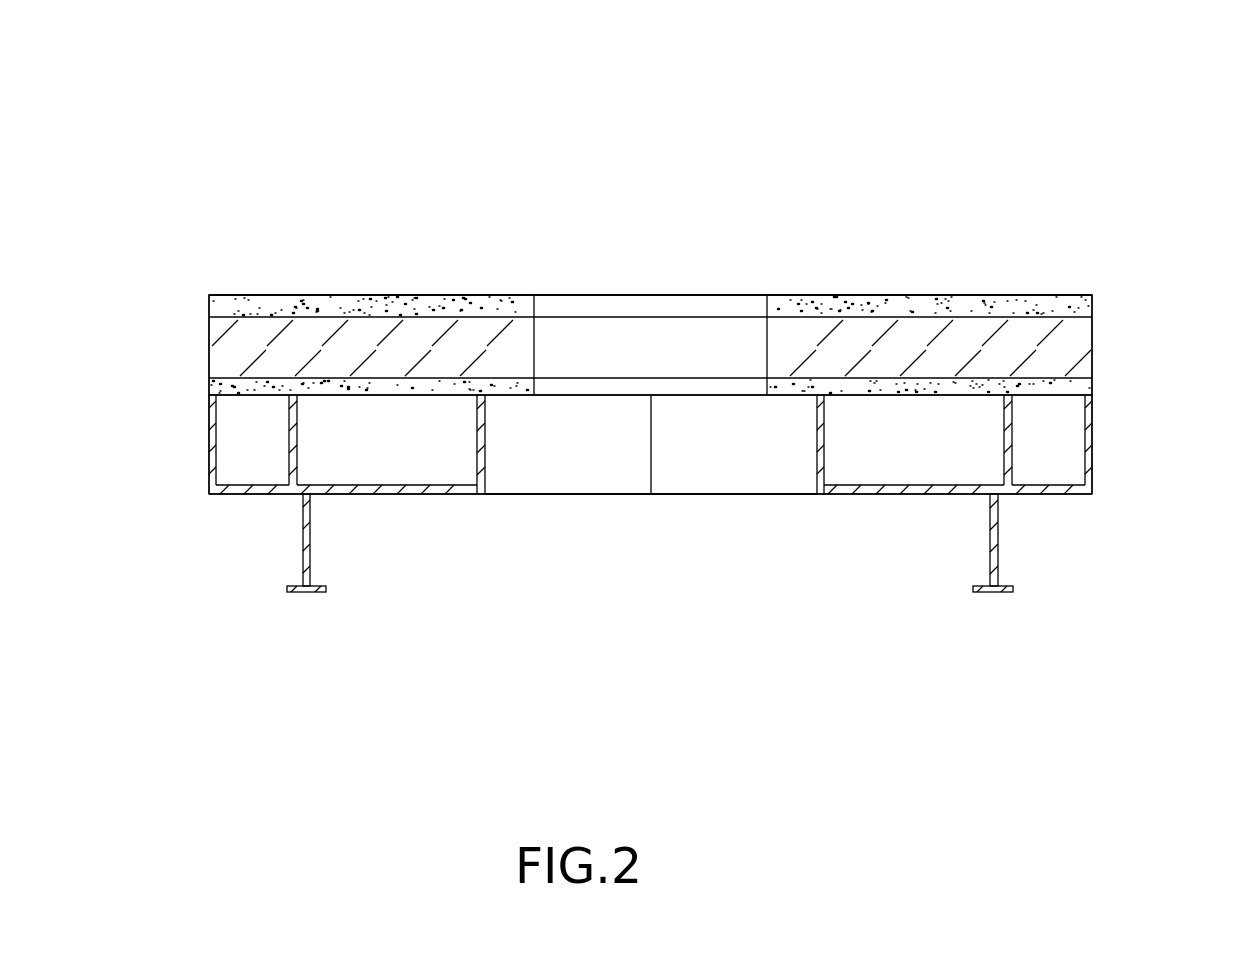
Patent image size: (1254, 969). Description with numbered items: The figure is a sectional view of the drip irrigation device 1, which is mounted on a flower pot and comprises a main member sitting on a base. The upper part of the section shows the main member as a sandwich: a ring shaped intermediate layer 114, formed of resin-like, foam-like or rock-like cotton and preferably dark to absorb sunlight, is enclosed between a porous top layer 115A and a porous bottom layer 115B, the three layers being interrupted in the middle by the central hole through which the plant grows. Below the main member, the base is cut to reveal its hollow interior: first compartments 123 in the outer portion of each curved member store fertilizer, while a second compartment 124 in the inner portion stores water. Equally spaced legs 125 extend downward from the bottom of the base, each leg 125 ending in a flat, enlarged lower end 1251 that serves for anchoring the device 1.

The drip irrigation device 1 is at (1097, 124).
The intermediate layer 114 is at (1073, 345).
The top layer 115A is at (218, 309).
The bottom layer 115B is at (220, 387).
The first compartment 123 is at (245, 472).
The second compartment 124 is at (890, 453).
The leg 125 is at (310, 545).
The flat, enlarged lower end 1251 is at (303, 592).